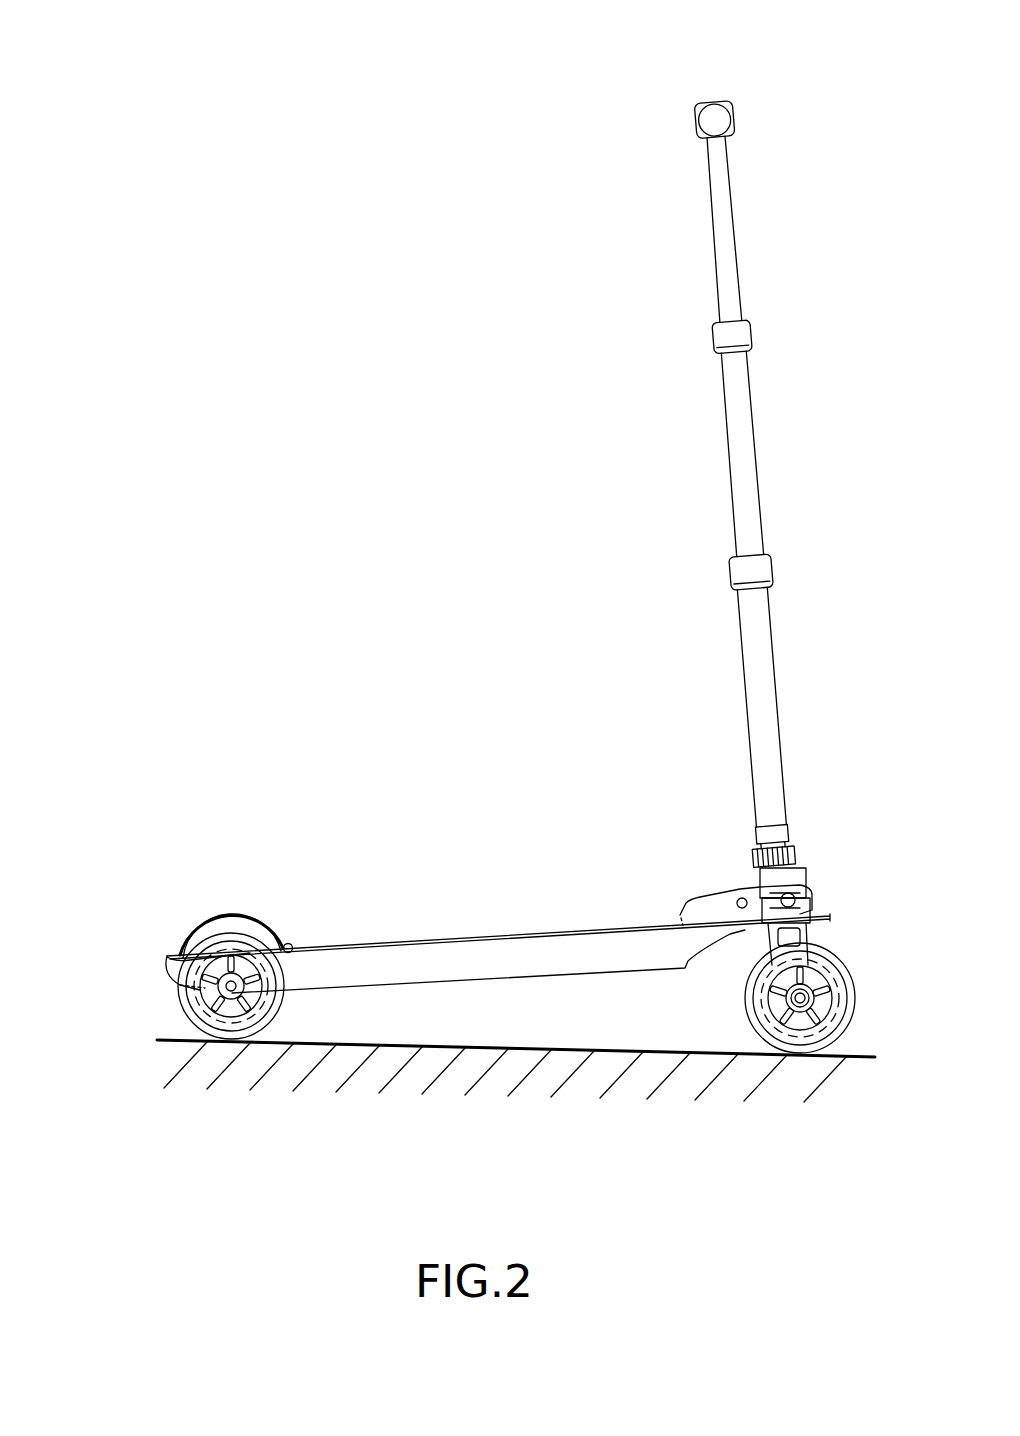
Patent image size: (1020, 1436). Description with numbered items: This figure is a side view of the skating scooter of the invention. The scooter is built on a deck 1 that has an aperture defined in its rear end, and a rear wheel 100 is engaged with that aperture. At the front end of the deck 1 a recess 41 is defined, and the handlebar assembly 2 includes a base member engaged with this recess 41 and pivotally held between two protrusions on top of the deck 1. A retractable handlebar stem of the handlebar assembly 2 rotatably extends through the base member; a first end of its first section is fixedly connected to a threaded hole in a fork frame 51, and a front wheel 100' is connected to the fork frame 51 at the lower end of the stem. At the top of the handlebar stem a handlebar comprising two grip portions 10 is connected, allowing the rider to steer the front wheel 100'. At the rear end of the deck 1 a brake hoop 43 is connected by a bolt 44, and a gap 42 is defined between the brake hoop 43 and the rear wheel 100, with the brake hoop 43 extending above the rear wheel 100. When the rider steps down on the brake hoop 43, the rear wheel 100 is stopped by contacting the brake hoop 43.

The deck 1 is at (552, 955).
The handlebar assembly 2 is at (703, 468).
The grip portions 10 is at (727, 82).
The recess 41 is at (808, 890).
The gap 42 is at (183, 945).
The brake hoop 43 is at (223, 925).
The bolt 44 is at (295, 945).
The fork frame 51 is at (805, 937).
The rear wheel 100 is at (204, 1064).
The front wheel 100' is at (800, 1075).